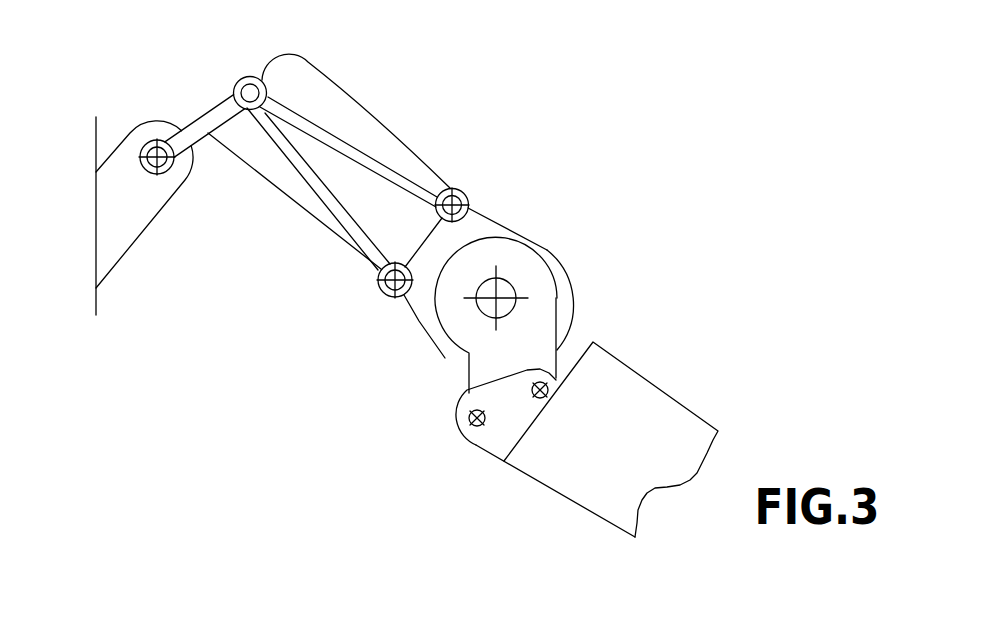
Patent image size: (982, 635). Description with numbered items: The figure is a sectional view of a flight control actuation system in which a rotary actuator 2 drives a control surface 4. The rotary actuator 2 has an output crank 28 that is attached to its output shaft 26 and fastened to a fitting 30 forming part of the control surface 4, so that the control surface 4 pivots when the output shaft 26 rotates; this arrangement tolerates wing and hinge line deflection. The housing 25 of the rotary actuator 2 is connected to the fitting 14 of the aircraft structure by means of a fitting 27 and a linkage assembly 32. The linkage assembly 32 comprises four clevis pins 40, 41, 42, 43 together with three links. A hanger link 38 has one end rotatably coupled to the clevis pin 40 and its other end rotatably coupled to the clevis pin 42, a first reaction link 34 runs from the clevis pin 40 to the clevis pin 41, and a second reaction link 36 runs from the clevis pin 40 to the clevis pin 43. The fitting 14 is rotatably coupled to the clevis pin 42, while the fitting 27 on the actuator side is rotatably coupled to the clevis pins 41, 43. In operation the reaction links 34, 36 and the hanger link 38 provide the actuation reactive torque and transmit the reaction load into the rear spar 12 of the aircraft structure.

The rotary actuator 2 is at (332, 163).
The control surface 4 is at (695, 372).
The rear spar 12 is at (96, 145).
The fitting 14 is at (140, 233).
The housing 25 is at (443, 358).
The output shaft 26 is at (515, 285).
The fitting 27 is at (472, 210).
The output crank 28 is at (569, 284).
The fitting 30 is at (500, 428).
The linkage assembly 32 is at (240, 72).
The first reaction link 34 is at (363, 150).
The second reaction link 36 is at (341, 227).
The hanger link 38 is at (212, 108).
The clevis pin 40 is at (268, 97).
The clevis pin 41 is at (467, 193).
The clevis pin 42 is at (142, 147).
The clevis pin 43 is at (383, 290).